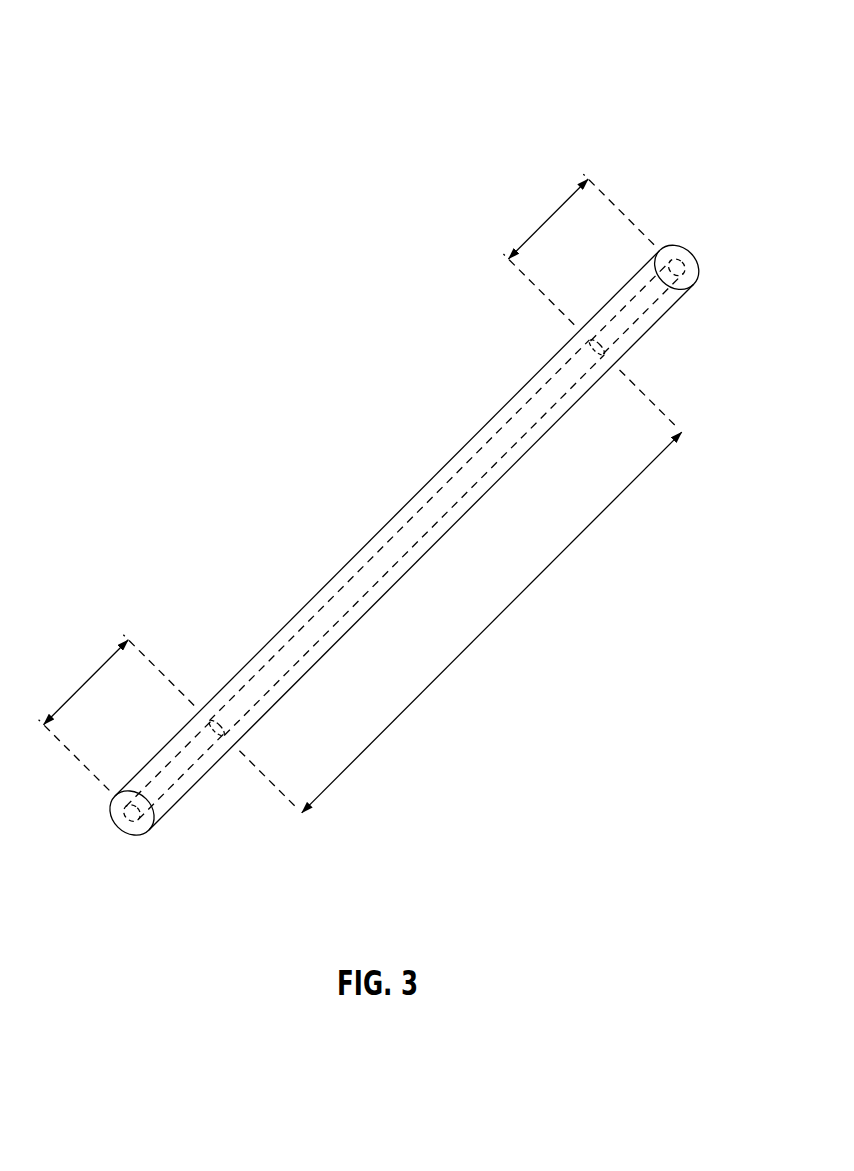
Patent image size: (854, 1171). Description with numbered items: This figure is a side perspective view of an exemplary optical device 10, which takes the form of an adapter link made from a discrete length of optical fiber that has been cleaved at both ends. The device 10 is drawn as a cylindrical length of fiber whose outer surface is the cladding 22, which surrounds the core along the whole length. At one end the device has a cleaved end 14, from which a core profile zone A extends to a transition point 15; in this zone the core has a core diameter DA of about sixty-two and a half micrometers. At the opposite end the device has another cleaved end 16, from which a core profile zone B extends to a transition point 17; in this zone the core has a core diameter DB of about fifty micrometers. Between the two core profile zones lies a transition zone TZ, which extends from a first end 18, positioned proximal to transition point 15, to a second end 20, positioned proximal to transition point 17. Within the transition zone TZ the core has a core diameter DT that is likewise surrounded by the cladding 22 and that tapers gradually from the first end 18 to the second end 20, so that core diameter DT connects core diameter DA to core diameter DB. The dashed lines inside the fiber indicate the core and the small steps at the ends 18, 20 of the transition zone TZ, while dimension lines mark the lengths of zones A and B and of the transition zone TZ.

The optical device 10 is at (90, 42).
The cleaved end 14 is at (110, 812).
The transition point 15 is at (197, 684).
The other cleaved end 16 is at (703, 268).
The transition point 17 is at (560, 334).
The first end 18 is at (231, 762).
The second end 20 is at (627, 368).
The cladding 22 is at (590, 321).
The core profile zone A is at (83, 688).
The core profile zone B is at (555, 213).
The core diameter DA is at (180, 768).
The core diameter DB is at (677, 265).
The core diameter DT is at (438, 495).
The transition zone TZ is at (493, 623).